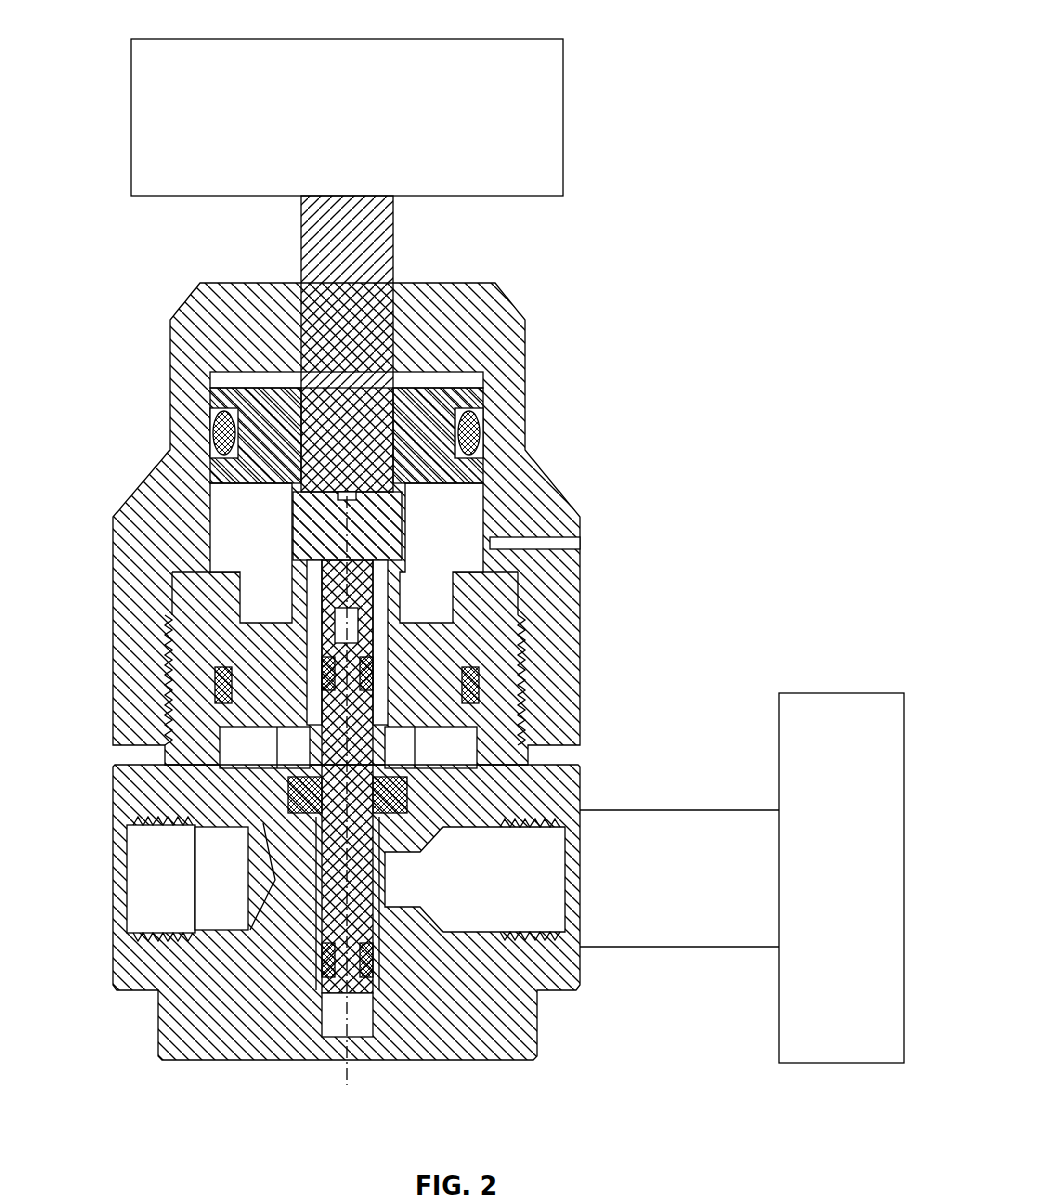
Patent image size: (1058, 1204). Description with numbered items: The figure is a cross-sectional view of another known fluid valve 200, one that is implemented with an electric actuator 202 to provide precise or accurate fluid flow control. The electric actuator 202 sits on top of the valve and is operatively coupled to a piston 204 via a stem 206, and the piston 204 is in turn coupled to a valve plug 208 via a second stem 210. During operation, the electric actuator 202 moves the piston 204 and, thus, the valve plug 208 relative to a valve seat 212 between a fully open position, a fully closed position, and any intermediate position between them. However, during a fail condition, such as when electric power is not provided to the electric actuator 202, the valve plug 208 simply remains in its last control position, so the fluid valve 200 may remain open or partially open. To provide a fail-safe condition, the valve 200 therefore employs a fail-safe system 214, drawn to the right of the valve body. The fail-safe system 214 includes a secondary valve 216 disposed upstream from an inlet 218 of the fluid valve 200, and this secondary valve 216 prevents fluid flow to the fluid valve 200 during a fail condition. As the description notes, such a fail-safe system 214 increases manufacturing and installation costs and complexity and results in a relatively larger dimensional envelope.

The fluid valve 200 is at (726, 47).
The electric actuator 202 is at (547, 127).
The piston 204 is at (438, 410).
The stem 206 is at (393, 258).
The valve plug 208 is at (320, 823).
The stem 210 is at (333, 525).
The valve seat 212 is at (307, 798).
The fail-safe system 214 is at (779, 621).
The secondary valve 216 is at (797, 722).
The inlet 218 is at (545, 887).